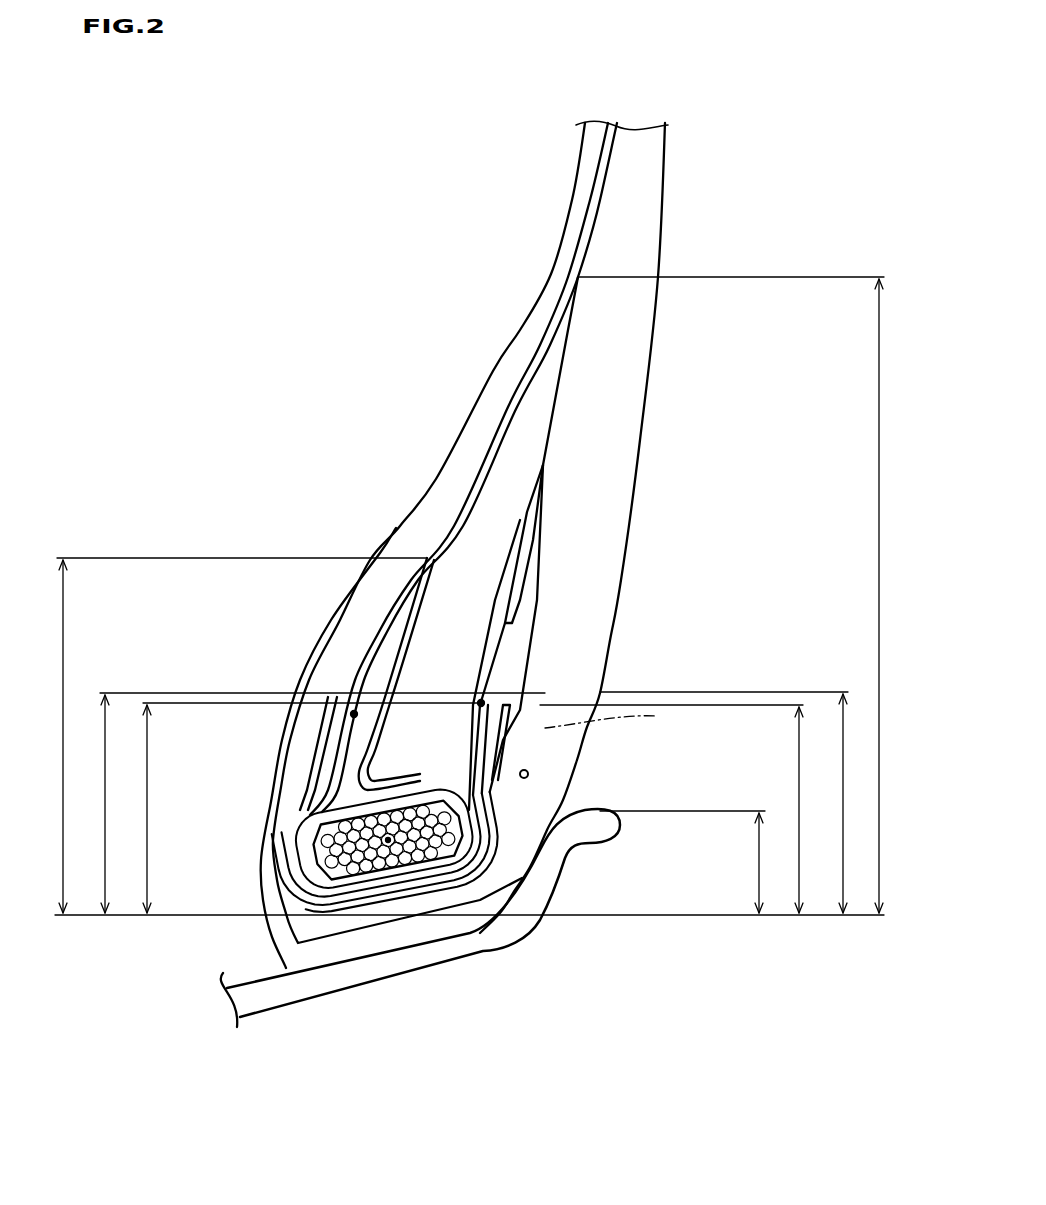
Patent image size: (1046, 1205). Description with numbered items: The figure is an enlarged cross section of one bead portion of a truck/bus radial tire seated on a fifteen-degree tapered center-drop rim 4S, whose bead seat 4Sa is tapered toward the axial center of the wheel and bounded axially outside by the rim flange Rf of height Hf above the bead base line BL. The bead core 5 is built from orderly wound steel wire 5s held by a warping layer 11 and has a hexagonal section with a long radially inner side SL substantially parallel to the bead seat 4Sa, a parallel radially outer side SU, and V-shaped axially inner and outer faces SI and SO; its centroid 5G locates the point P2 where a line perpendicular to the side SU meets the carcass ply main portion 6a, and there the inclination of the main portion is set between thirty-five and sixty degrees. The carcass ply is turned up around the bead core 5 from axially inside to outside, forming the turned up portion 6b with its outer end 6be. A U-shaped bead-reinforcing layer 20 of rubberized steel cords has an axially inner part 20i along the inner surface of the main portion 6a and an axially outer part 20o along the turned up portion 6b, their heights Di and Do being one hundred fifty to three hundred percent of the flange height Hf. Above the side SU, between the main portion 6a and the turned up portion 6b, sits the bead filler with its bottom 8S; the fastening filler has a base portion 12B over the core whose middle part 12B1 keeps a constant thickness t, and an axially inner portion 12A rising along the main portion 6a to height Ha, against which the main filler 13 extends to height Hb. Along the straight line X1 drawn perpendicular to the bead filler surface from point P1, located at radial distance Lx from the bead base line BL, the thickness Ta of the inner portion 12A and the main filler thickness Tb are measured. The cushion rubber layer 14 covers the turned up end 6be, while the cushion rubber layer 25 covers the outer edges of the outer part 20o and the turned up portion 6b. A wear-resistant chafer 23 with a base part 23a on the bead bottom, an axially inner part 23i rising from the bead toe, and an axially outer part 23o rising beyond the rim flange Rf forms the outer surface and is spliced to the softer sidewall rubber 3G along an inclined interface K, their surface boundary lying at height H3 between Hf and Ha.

The carcass ply main portion 6a is at (512, 400).
The carcass ply turned up portion 6b is at (515, 655).
The outer end of turned up portion 6be is at (520, 615).
The main filler 13 is at (470, 515).
The cushion rubber layer 14 is at (502, 572).
The sidewall rubber 3G is at (630, 437).
The cushion rubber layer 25 is at (537, 548).
The axially inner portion of fastening filler 12A is at (380, 665).
The base portion of fastening filler 12B is at (503, 745).
The middle part of base portion 12B1 is at (417, 761).
The thickness of middle part t is at (394, 755).
The bottom of bead filler 8S is at (315, 876).
The bead core 5 is at (462, 880).
The steel wire 5s is at (420, 880).
The centroid of bead core 5G is at (352, 913).
The radially inner side of bead core SL is at (387, 880).
The warping layer 11 is at (525, 880).
The rim flange Rf is at (622, 828).
The chafer 23 is at (493, 899).
The axially inner part of chafer 23i is at (283, 938).
The axially outer part of chafer 23o is at (535, 822).
The base part of chafer 23a is at (323, 953).
The wheel rim 4S is at (265, 1015).
The bead seat 4Sa is at (253, 977).
The axially outer face of bead core SO is at (526, 876).
The radially outer side of bead core SU is at (325, 770).
The axially inner face of bead core SI is at (312, 845).
The interface between chafer and sidewall rubber K is at (530, 774).
The point on bead filler outer surface P1 is at (486, 702).
The intersecting point on carcass main portion P2 is at (352, 711).
The straight line perpendicular to bead filler surface X1 is at (619, 718).
The bead-reinforcing layer 20 is at (678, 741).
The axially outer part of bead-reinforcing layer 20o is at (515, 737).
The axially inner part of bead-reinforcing layer 20i is at (338, 800).
The main filler thickness Tb is at (392, 684).
The thickness of axially inner portion Ta is at (352, 690).
The bead base line BL is at (722, 918).
The height of main filler Hb is at (735, 595).
The height of axially inner portion Ha is at (237, 735).
The radial height of axially inner part Di is at (469, 802).
The radial distance of point P1 Lx is at (305, 808).
The height of chafer/sidewall boundary H3 is at (840, 803).
The radial height of axially outer part Do is at (675, 809).
The height of rim flange Hf is at (686, 862).